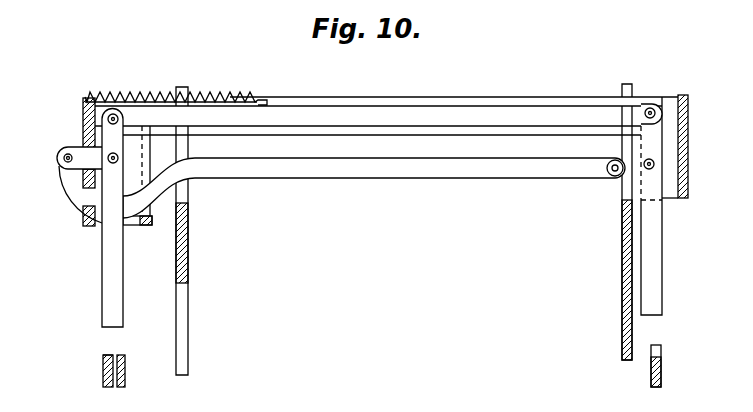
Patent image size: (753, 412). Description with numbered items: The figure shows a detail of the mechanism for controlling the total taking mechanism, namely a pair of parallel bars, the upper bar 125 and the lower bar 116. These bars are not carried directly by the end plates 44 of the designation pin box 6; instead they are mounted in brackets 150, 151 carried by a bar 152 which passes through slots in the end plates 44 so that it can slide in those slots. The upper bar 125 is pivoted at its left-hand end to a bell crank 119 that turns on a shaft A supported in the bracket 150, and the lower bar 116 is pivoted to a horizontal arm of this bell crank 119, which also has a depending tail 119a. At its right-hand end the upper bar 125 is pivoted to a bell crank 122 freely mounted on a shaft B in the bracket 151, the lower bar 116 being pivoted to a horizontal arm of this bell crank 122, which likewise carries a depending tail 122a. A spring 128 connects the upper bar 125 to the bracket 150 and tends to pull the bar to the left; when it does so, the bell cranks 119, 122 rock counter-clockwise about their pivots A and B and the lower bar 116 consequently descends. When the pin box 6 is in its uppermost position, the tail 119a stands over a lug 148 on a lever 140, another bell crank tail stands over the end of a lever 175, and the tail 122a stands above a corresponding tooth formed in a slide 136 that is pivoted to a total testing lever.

The designation pin box 6 is at (400, 195).
The end plates 44 is at (188, 276).
The lower bar 116 is at (360, 165).
The bell crank 119 is at (113, 141).
The depending tail 119a is at (106, 275).
The bell crank 122 is at (652, 139).
The depending tail 122a is at (662, 262).
The upper bar 125 is at (323, 118).
The spring 128 is at (215, 97).
The slide 136 is at (663, 368).
The lever 140 is at (103, 376).
The lug 148 is at (104, 357).
The bracket 150 is at (83, 115).
The bracket 151 is at (690, 100).
The bar 152 is at (415, 103).
The lever 175 is at (126, 367).
The shaft A is at (111, 158).
The shaft B is at (655, 164).